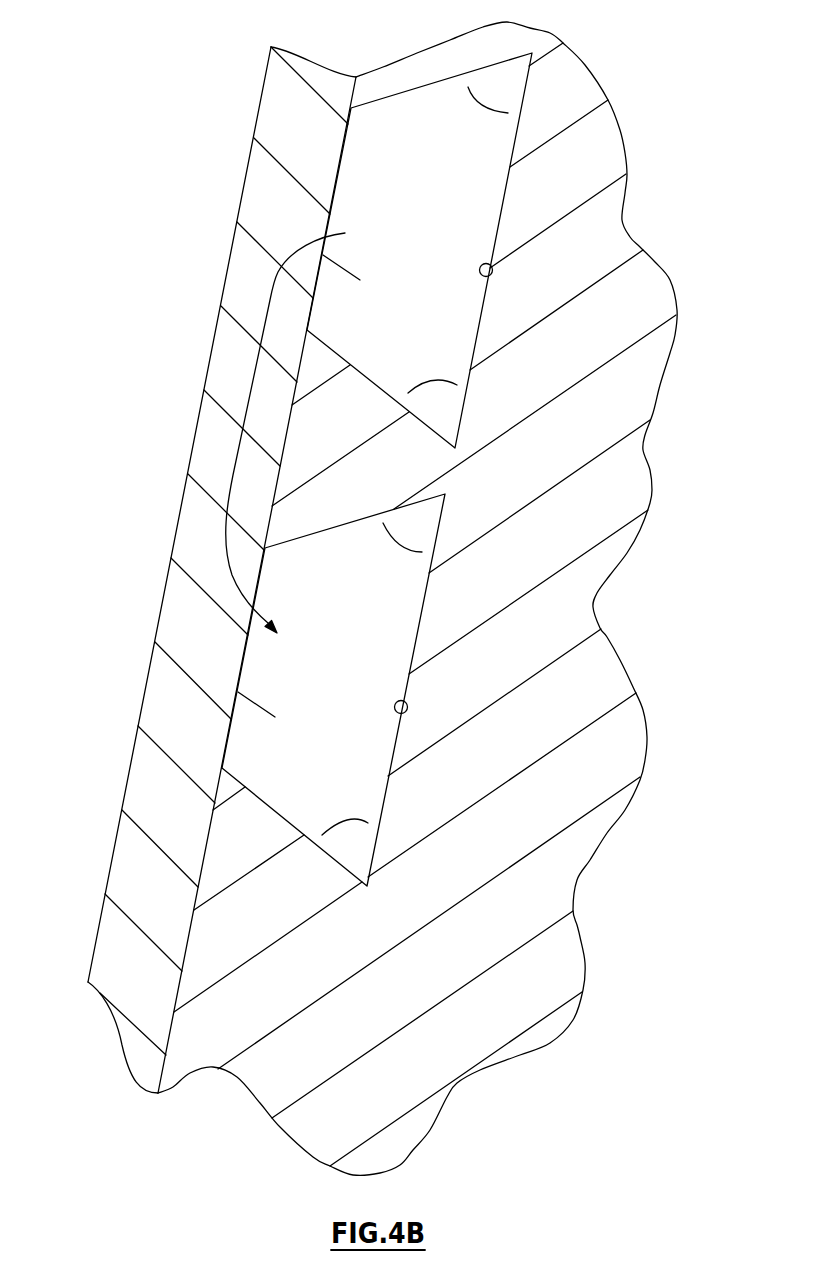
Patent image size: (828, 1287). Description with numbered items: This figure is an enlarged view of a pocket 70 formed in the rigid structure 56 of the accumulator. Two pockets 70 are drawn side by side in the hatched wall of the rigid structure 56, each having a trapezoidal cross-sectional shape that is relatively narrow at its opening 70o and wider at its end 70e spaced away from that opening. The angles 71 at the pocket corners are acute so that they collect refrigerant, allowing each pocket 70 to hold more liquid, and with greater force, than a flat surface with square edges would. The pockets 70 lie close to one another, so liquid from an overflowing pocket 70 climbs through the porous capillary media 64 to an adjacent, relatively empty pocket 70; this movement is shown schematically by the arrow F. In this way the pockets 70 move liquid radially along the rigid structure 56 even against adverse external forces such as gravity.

The rigid structure 56 is at (443, 1070).
The porous capillary media 64 is at (222, 373).
The pocket 70 is at (421, 236).
The opening 70o is at (334, 262).
The end 70e is at (493, 265).
The angle 71 is at (482, 103).
The liquid climb F is at (233, 470).